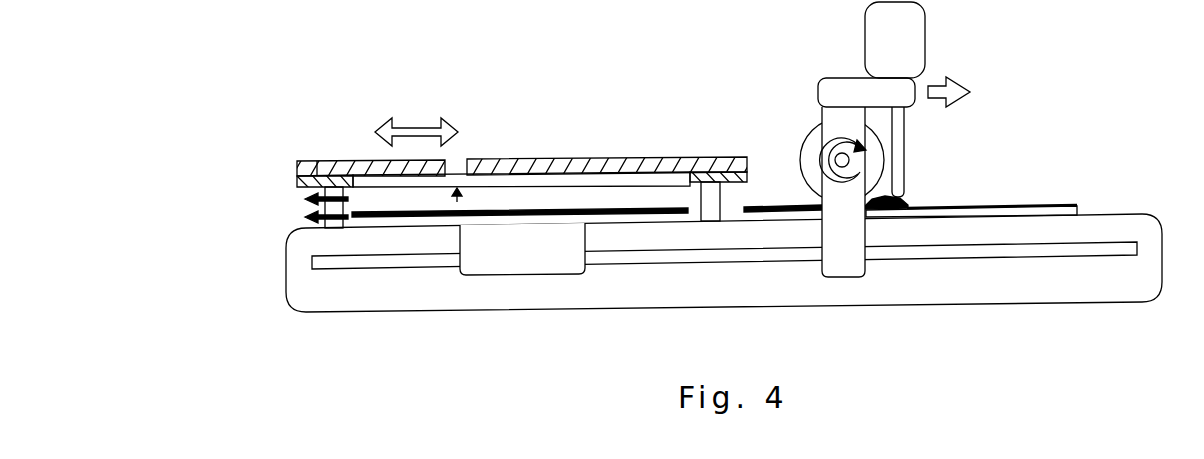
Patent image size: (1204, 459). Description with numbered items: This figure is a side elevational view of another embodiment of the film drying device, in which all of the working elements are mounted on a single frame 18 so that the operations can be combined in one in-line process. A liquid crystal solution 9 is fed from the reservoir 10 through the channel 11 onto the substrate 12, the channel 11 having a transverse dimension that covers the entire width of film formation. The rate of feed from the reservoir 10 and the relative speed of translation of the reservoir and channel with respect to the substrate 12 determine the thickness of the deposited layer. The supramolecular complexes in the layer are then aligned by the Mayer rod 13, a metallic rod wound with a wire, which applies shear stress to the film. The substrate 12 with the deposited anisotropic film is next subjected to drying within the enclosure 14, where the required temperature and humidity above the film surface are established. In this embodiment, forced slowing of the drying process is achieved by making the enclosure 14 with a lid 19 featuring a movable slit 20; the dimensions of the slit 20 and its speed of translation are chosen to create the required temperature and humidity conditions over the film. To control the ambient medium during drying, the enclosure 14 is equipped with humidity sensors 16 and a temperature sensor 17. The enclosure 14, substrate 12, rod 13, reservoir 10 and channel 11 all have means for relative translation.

The liquid crystal solution 9 is at (906, 201).
The reservoir 10 is at (913, 52).
The channel 11 is at (898, 118).
The substrate 12 is at (1030, 212).
The Mayer rod 13 is at (866, 177).
The enclosure 14 is at (812, 153).
The humidity sensors 16 is at (306, 199).
The temperature sensor 17 is at (306, 217).
The frame 18 is at (1062, 289).
The lid 19 is at (745, 163).
The movable slit 20 is at (458, 168).